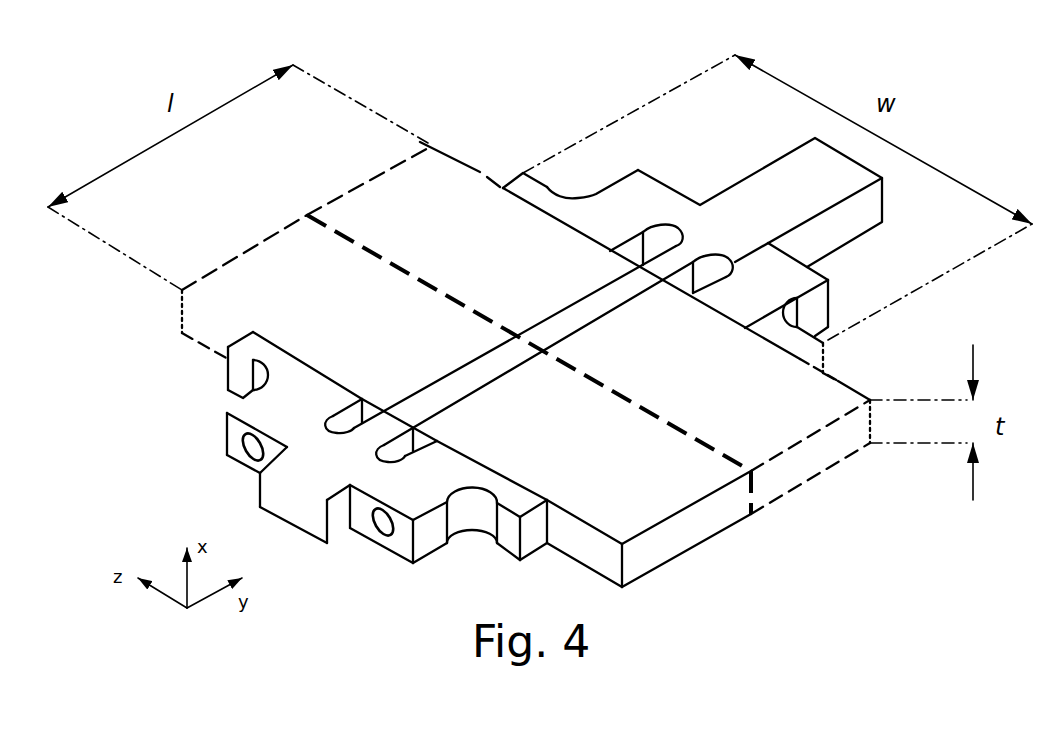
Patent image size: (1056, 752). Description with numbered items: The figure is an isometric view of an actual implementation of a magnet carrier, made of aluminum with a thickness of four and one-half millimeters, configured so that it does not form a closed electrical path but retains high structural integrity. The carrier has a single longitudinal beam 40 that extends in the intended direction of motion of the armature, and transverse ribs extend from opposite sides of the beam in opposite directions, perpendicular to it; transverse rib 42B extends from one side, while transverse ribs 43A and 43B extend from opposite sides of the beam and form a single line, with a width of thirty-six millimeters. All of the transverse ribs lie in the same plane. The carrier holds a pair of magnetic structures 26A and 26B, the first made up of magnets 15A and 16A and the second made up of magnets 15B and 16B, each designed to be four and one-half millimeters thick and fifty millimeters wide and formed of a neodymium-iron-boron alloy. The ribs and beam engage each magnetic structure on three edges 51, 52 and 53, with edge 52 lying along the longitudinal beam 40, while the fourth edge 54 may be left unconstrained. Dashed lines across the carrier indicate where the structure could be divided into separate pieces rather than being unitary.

The magnet 15A is at (576, 445).
The magnet 15B is at (380, 330).
The magnet 16A is at (710, 397).
The magnet 16B is at (507, 244).
The magnet 26A is at (793, 467).
The magnet 26B is at (274, 235).
The longitudinal beam 40 is at (528, 345).
The transverse rib 42B is at (227, 370).
The transverse rib 43A is at (826, 345).
The transverse rib 43B is at (550, 176).
The edge 51 is at (192, 322).
The edge 52 is at (455, 370).
The edge 53 is at (462, 161).
The fourth edge 54 is at (307, 214).